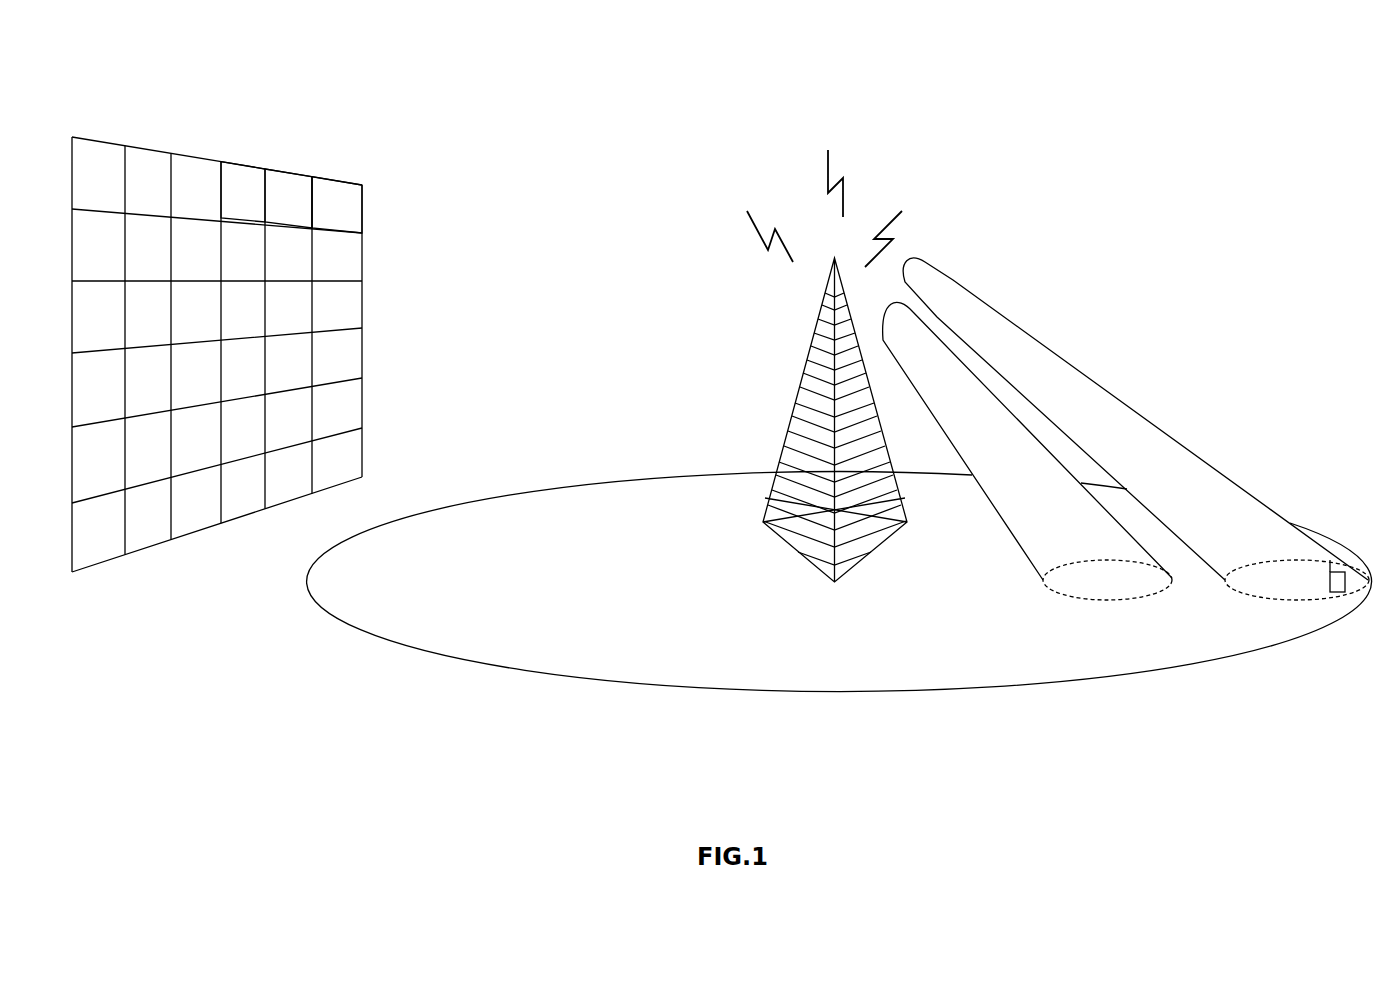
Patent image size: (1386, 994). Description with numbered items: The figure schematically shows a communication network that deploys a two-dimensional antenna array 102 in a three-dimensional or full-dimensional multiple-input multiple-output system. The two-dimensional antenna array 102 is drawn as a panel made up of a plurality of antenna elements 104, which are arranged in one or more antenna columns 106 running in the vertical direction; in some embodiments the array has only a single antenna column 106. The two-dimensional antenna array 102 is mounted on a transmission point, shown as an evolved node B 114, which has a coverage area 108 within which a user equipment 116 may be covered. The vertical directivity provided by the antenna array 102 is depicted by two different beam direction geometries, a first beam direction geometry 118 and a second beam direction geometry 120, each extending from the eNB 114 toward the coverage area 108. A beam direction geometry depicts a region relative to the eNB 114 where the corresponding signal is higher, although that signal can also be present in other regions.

The two-dimensional antenna array 102 is at (200, 153).
The antenna elements 104 is at (288, 170).
The antenna column 106 is at (337, 177).
The coverage area 108 is at (548, 490).
The evolved node B 114 is at (767, 503).
The user equipment 116 is at (1330, 583).
The first beam direction geometry 118 is at (1017, 543).
The second beam direction geometry 120 is at (1222, 470).